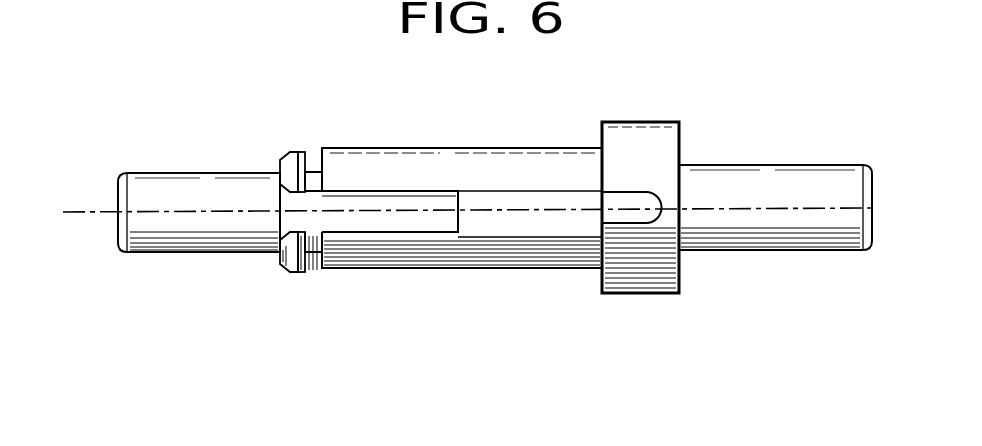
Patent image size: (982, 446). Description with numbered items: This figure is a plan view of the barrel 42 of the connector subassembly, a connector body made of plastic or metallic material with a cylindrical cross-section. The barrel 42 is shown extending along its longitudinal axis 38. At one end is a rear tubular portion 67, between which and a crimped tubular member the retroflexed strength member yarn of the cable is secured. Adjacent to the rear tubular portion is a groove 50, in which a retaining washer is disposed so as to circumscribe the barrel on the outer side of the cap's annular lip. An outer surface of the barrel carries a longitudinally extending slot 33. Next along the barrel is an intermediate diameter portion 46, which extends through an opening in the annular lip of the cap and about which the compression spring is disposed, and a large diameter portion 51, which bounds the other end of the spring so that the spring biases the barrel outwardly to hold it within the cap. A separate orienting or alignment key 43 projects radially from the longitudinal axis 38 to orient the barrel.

The longitudinal axis 38 is at (73, 212).
The rear tubular portion 67 is at (207, 195).
The groove 50 is at (313, 152).
The slot 33 is at (427, 190).
The barrel 42 is at (546, 122).
The intermediate diameter portion 46 is at (531, 240).
The large diameter portion 51 is at (641, 135).
The alignment key 43 is at (637, 216).